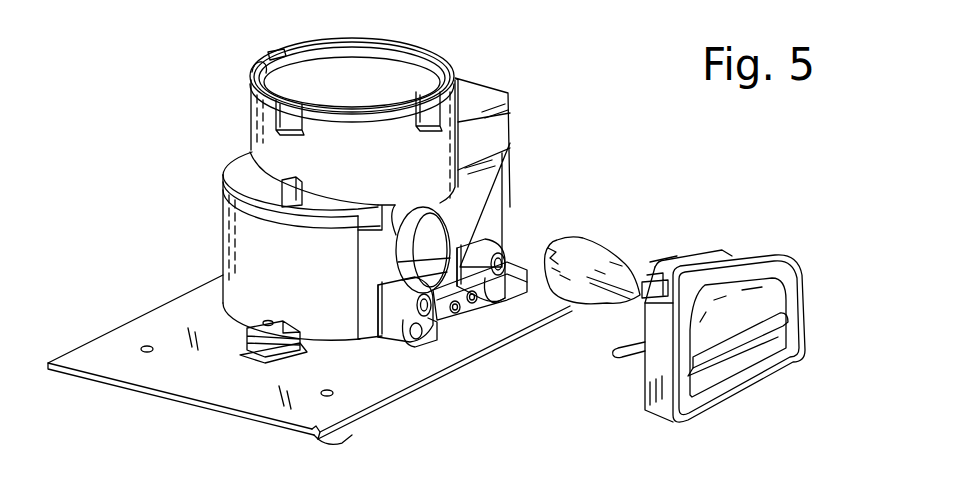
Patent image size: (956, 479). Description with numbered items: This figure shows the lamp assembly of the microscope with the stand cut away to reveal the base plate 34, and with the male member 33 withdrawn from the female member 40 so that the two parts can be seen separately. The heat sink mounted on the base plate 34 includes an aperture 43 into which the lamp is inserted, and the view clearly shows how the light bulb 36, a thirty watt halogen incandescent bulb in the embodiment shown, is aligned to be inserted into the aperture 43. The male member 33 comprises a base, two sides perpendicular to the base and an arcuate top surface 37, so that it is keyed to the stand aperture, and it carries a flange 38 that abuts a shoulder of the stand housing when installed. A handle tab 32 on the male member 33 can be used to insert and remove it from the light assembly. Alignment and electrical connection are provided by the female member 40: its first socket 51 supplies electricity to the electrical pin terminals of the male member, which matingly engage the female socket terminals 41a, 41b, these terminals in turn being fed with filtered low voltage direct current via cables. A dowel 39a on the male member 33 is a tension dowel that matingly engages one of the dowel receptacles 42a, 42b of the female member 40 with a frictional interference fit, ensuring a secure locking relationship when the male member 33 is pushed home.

The handle tab 32 is at (773, 337).
The male member 33 is at (780, 291).
The base plate 34 is at (193, 385).
The light bulb 36 is at (587, 262).
The arcuate top surface 37 is at (710, 263).
The flange 38 is at (760, 253).
The dowel 39a is at (625, 356).
The female member 40 is at (527, 284).
The female socket terminal 41a is at (457, 312).
The female socket terminal 41b is at (472, 302).
The dowel receptacle 42a is at (433, 305).
The dowel receptacle 42b is at (512, 258).
The aperture 43 is at (417, 240).
The first socket 51 is at (510, 142).